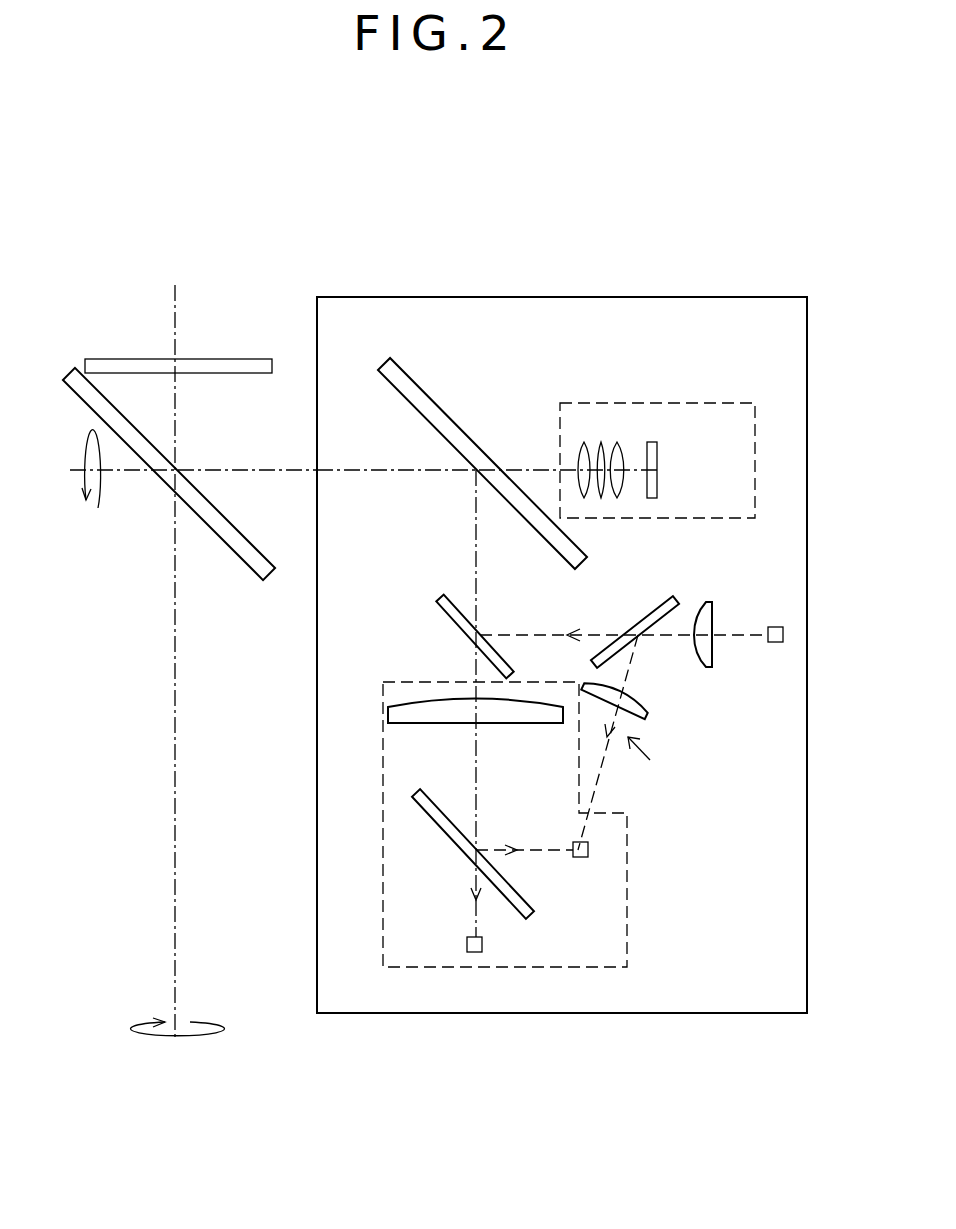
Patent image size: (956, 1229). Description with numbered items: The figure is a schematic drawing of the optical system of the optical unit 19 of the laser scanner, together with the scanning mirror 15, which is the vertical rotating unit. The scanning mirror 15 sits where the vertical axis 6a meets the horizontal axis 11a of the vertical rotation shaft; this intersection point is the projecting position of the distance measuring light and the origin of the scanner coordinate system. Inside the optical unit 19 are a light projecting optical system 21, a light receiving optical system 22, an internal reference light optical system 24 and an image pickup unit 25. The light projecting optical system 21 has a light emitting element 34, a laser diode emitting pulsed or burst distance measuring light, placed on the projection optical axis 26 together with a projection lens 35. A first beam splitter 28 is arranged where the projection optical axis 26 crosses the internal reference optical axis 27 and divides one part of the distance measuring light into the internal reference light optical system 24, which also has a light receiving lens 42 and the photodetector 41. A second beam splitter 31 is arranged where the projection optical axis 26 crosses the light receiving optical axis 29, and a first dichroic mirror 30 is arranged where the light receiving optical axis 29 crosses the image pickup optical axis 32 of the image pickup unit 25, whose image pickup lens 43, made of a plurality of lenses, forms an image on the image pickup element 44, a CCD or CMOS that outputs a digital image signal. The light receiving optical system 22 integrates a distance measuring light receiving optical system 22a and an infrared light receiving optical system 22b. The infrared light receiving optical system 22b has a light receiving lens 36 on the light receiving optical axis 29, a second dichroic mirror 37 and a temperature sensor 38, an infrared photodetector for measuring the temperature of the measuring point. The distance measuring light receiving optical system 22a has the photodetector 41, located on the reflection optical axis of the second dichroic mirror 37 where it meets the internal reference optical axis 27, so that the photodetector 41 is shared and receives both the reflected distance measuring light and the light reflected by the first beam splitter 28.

The optical unit 19 is at (563, 297).
The axis 6a is at (177, 807).
The horizontal axis 11a is at (240, 470).
The scanning mirror 15 is at (160, 480).
The image pickup optical axis 32 is at (522, 470).
The first dichroic mirror 30 is at (413, 380).
The image pickup unit 25 is at (655, 400).
The image pickup lens 43 is at (602, 440).
The image pickup element 44 is at (655, 460).
The light receiving optical axis 29 is at (475, 547).
The second beam splitter 31 is at (447, 618).
The projection optical axis 26 is at (522, 633).
The first beam splitter 28 is at (645, 617).
The light projecting optical system 21 is at (748, 623).
The projection lens 35 is at (713, 653).
The light emitting element 34 is at (776, 627).
The light receiving lens 42 is at (648, 713).
The internal reference optical axis 27 is at (600, 768).
The internal reference light optical system 24 is at (633, 750).
The light receiving optical system 22 is at (627, 900).
The light receiving lens 36 is at (442, 723).
The second dichroic mirror 37 is at (445, 832).
The photodetector 41 is at (580, 857).
The temperature sensor 38 is at (482, 945).
The distance measuring light receiving optical system 22a is at (542, 857).
The infrared light receiving optical system 22b is at (463, 917).